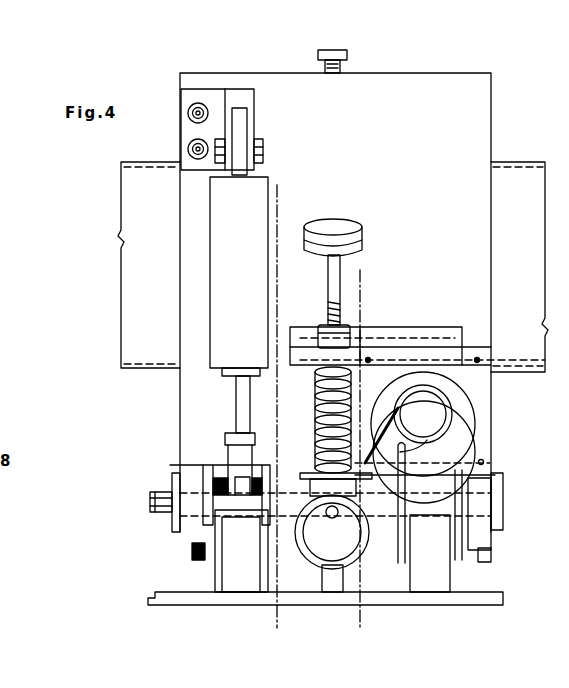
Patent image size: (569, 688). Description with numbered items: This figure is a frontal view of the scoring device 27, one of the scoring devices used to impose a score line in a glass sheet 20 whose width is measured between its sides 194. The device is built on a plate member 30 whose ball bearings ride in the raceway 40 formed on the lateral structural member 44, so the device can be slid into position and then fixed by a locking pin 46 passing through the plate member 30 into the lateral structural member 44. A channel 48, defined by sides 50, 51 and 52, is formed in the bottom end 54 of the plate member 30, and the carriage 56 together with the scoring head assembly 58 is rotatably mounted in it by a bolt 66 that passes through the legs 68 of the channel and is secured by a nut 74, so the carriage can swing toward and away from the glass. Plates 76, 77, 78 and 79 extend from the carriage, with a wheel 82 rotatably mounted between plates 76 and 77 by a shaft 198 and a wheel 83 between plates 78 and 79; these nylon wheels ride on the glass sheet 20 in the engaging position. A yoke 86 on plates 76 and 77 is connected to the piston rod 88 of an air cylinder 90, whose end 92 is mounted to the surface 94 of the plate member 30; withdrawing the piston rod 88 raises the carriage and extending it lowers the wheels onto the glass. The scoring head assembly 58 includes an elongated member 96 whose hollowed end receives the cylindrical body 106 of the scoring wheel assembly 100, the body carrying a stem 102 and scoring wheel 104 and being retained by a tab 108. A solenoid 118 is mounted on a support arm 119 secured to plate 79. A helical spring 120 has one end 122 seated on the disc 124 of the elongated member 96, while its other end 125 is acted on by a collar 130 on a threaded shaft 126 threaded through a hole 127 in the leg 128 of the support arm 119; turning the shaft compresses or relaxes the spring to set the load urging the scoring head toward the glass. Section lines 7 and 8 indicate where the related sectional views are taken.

The section line 7 is at (263, 196).
The section line 8 is at (348, 280).
The glass sheet 20 is at (503, 596).
The scoring device 27 is at (512, 140).
The plate member 30 is at (494, 66).
The raceway 40 is at (518, 162).
The lateral structural member 44 is at (117, 265).
The locking pin 46 is at (334, 52).
The channel 48 is at (222, 452).
The channel side 50 is at (204, 468).
The channel side 51 is at (292, 462).
The channel side 52 is at (480, 540).
The bottom end 54 is at (186, 551).
The carriage 56 is at (188, 566).
The scoring head assembly 58 is at (355, 578).
The bolt 66 is at (150, 501).
The legs of the channel 68 is at (190, 537).
The nut 74 is at (165, 516).
The plate 76 is at (215, 562).
The plate 77 is at (266, 575).
The plate 78 is at (407, 560).
The plate 79 is at (470, 578).
The wheel 82 is at (228, 596).
The wheel 83 is at (432, 583).
The yoke 86 is at (250, 518).
The piston rod 88 is at (236, 391).
The air cylinder 90 is at (206, 287).
The end of the air cylinder 92 is at (240, 140).
The surface of the plate member 94 is at (413, 165).
The elongated member 96 is at (294, 566).
The scoring wheel assembly 100 is at (362, 560).
The stem 102 is at (318, 594).
The scoring wheel 104 is at (335, 594).
The cylindrical body 106 is at (346, 556).
The tab 108 is at (296, 534).
The solenoid 118 is at (425, 482).
The support arm 119 is at (430, 323).
The helical spring 120 is at (311, 398).
The spring end 122 is at (316, 470).
The disc 124 is at (311, 482).
The spring end 125 is at (318, 330).
The threaded shaft 126 is at (325, 270).
The hole 127 is at (328, 305).
The leg 128 is at (437, 328).
The collar 130 is at (345, 370).
The sides 194 is at (172, 606).
The shaft 198 is at (220, 573).